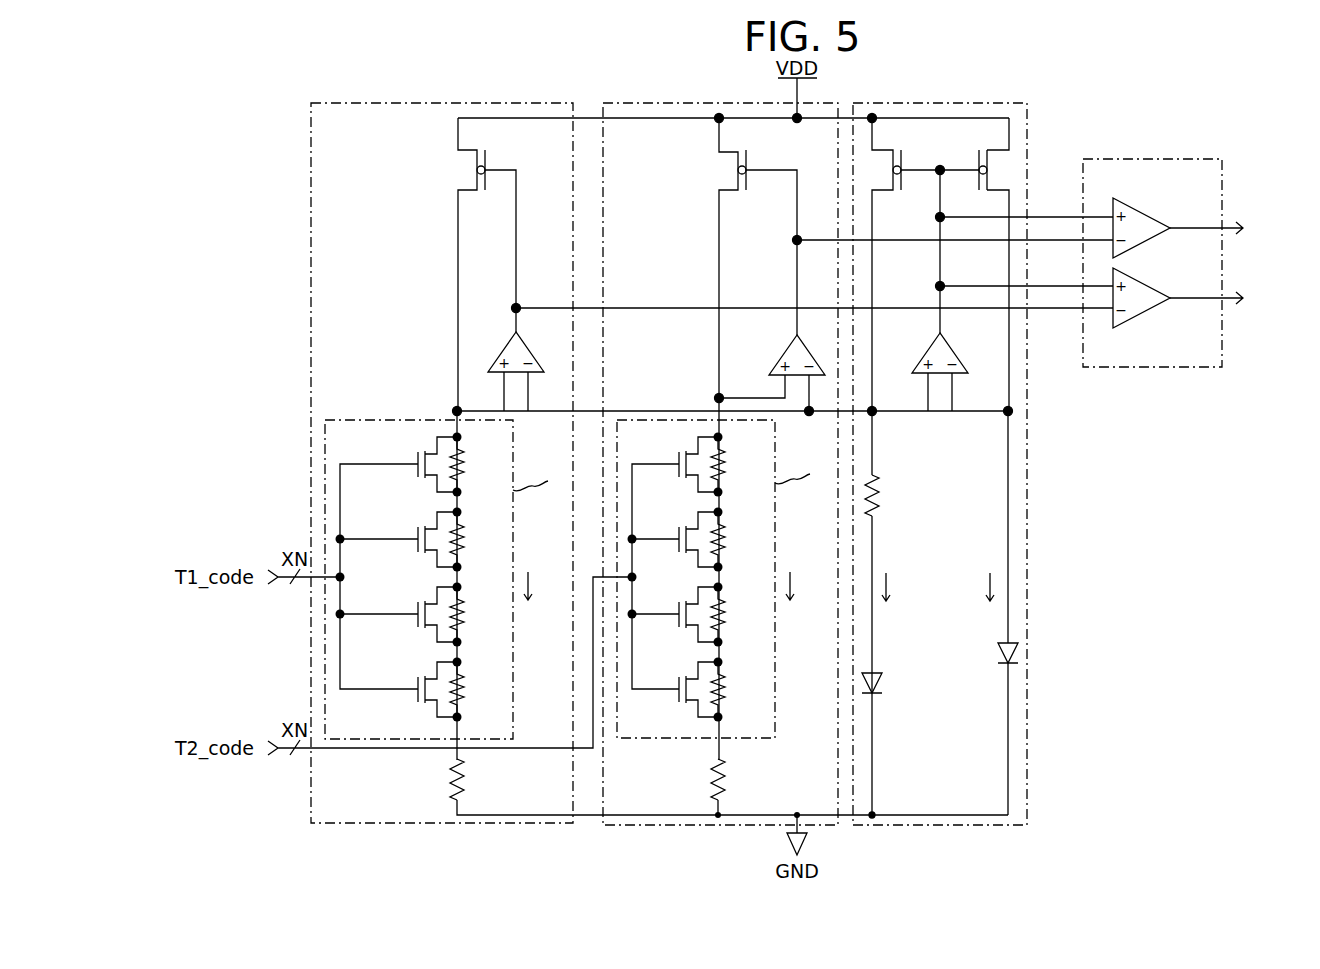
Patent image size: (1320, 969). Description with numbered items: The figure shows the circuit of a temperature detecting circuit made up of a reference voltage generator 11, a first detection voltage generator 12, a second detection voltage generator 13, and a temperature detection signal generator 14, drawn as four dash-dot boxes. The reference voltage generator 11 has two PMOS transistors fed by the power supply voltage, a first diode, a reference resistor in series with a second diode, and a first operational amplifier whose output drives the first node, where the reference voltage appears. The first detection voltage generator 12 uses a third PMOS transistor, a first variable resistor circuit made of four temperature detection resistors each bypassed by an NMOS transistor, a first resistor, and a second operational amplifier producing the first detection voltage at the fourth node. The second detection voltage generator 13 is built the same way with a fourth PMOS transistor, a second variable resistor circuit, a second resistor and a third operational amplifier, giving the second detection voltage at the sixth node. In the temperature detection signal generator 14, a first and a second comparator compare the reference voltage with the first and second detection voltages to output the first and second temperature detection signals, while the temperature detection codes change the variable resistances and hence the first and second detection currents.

The reference voltage generator 11 is at (940, 441).
The first detection voltage generator 12 is at (720, 441).
The second detection voltage generator 13 is at (659, 440).
The temperature detection signal generator 14 is at (1170, 237).